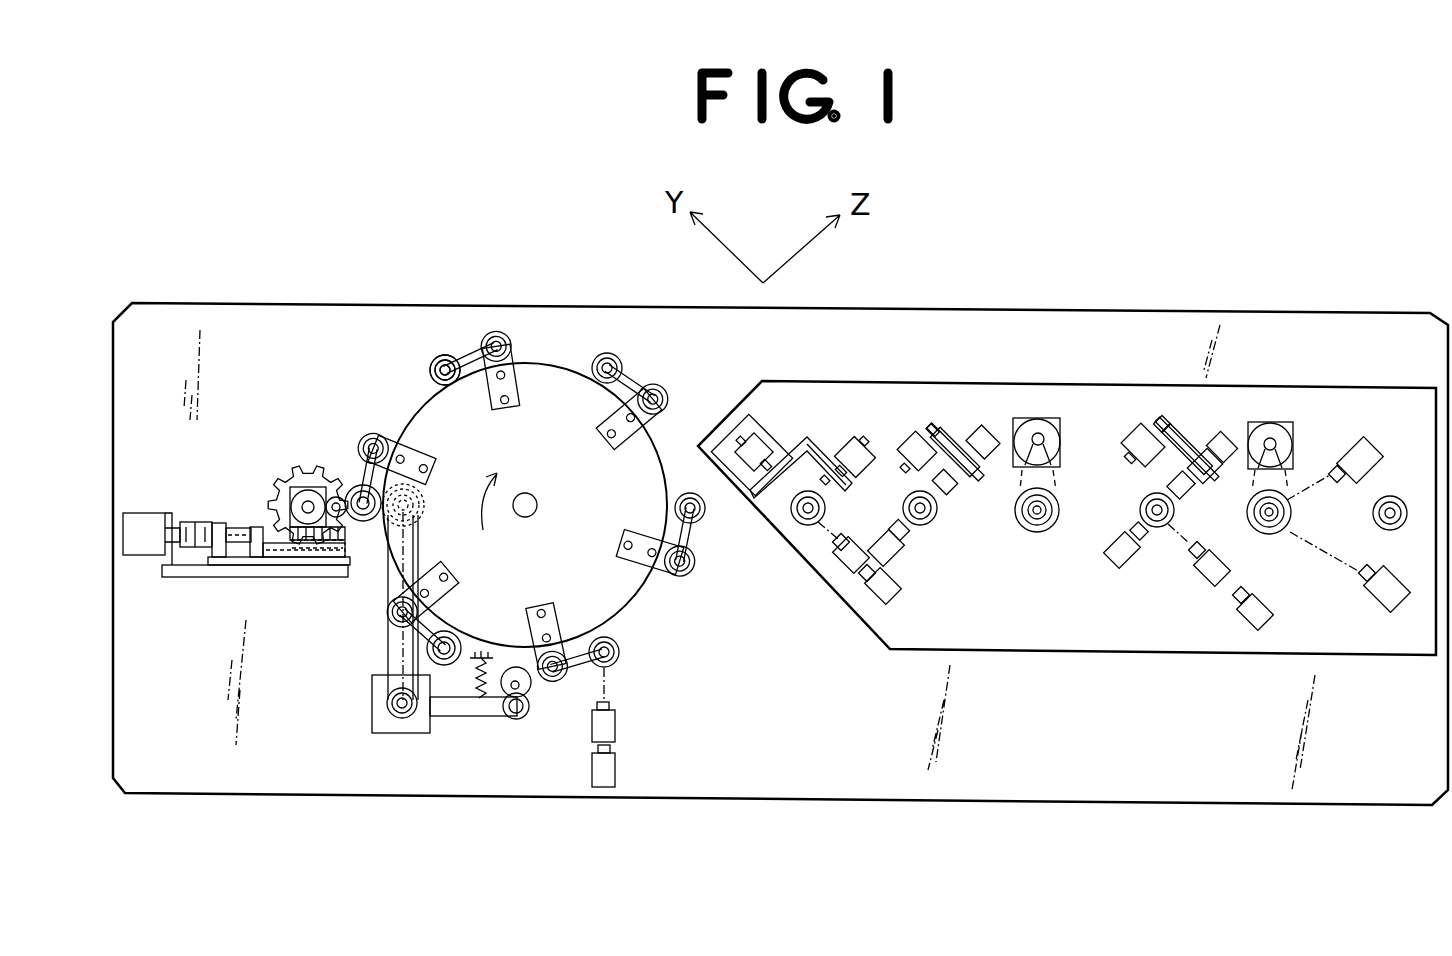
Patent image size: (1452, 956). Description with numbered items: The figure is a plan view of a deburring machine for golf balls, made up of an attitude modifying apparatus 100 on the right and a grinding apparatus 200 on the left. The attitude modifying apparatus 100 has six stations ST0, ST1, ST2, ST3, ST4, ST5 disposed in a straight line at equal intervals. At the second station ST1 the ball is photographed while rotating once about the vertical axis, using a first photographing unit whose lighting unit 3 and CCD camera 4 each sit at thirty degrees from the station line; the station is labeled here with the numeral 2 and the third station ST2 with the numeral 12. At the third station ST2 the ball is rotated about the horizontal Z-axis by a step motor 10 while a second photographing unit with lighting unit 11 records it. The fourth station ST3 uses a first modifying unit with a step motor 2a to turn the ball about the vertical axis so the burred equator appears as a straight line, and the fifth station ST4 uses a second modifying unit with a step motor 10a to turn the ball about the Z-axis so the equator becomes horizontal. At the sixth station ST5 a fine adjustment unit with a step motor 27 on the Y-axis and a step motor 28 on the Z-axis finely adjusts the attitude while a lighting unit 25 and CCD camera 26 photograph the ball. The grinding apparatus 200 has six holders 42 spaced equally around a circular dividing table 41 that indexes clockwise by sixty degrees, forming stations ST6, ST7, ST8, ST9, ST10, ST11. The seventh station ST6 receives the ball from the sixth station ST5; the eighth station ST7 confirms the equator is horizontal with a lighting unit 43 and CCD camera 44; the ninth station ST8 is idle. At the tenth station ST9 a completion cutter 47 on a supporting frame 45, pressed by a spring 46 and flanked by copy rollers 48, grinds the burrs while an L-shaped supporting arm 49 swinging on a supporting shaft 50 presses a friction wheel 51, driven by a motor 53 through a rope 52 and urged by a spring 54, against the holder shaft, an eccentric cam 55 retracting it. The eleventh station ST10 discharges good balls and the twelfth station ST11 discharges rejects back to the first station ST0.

The grinding apparatus 200 is at (446, 502).
The attitude modifying apparatus 100 is at (1067, 357).
The circular dividing table 41 is at (552, 364).
The holder 42 is at (440, 357).
The lighting unit 43 is at (615, 722).
The CCD camera 44 is at (615, 772).
The supporting frame 45 is at (193, 580).
The spring 46 is at (237, 522).
The completion cutter 47 is at (290, 472).
The copy roller 48 is at (337, 496).
The supporting arm 49 is at (458, 705).
The supporting shaft 50 is at (404, 720).
The friction wheel 51 is at (418, 493).
The rope 52 is at (388, 667).
The motor 53 is at (378, 713).
The spring 54 is at (505, 718).
The eccentric cam 55 is at (528, 693).
The step motor 27 is at (768, 445).
The step motor 28 is at (846, 440).
The lighting unit 25 is at (845, 572).
The CCD camera 26 is at (897, 600).
The step motor 10a is at (908, 433).
The step motor 10 is at (1130, 432).
The step motor 2a is at (1015, 417).
The rotor 2 is at (1300, 427).
The CCD camera 4 is at (1338, 452).
The lighting unit 3 is at (1376, 603).
The lighting unit 11 is at (1197, 585).
The part feeder 12 is at (1240, 627).
The first station ST0 is at (1391, 498).
The second station ST1 is at (1288, 528).
The third station ST2 is at (1160, 500).
The fourth station ST3 is at (1038, 533).
The fifth station ST4 is at (935, 522).
The sixth station ST5 is at (800, 527).
The seventh station ST6 is at (706, 515).
The eighth station ST7 is at (620, 657).
The ninth station ST8 is at (458, 635).
The tenth station ST9 is at (360, 521).
The eleventh station ST10 is at (432, 365).
The twelfth station ST11 is at (622, 358).